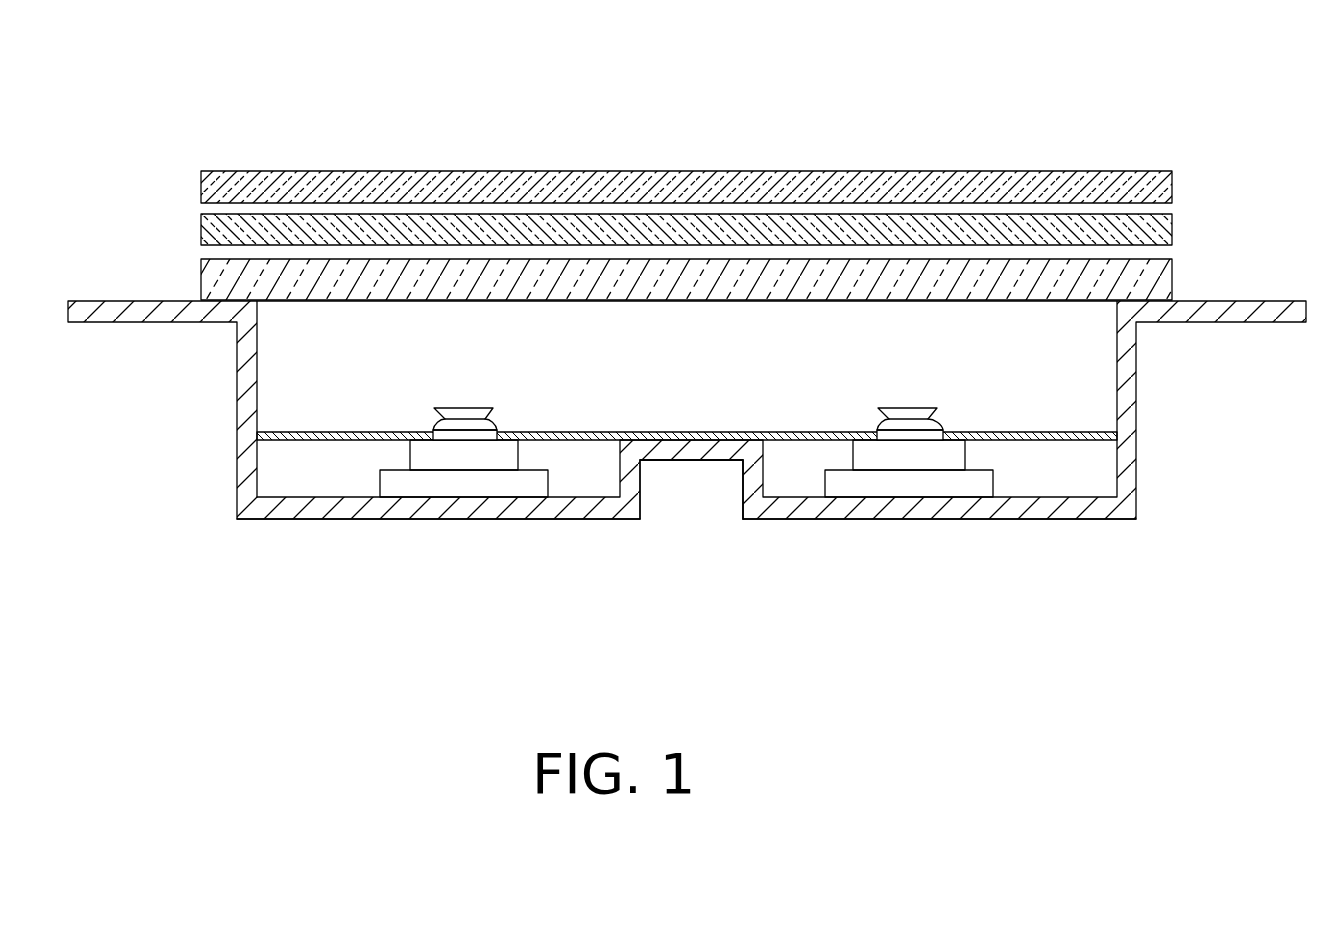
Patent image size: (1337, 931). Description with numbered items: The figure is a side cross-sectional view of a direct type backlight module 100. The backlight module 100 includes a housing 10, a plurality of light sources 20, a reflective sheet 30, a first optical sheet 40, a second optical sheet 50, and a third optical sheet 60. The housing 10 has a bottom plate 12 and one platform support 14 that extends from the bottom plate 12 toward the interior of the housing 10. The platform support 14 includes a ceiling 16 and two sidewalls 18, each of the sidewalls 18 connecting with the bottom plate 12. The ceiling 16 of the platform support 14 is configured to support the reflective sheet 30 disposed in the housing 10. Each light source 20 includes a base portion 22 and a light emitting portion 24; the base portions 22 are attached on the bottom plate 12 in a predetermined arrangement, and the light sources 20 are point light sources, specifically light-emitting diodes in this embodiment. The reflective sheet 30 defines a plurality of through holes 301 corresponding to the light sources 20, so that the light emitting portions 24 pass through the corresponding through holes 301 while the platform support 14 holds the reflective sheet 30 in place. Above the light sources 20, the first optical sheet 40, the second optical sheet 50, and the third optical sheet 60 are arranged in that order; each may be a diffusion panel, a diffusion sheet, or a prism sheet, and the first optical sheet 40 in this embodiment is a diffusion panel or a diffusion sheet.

The backlight module 100 is at (575, 82).
The housing 10 is at (248, 377).
The bottom plate 12 is at (320, 505).
The platform support 14 is at (701, 548).
The ceiling 16 is at (672, 452).
The sidewalls 18 is at (752, 468).
The light sources 20 is at (909, 529).
The base portion 22 is at (878, 453).
The light emitting portion 24 is at (917, 413).
The reflective sheet 30 is at (1100, 430).
The through holes 301 is at (503, 438).
The first optical sheet 40 is at (1172, 266).
The second optical sheet 50 is at (1172, 228).
The third optical sheet 60 is at (1172, 177).